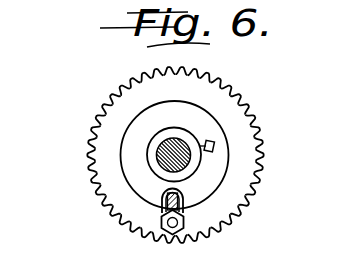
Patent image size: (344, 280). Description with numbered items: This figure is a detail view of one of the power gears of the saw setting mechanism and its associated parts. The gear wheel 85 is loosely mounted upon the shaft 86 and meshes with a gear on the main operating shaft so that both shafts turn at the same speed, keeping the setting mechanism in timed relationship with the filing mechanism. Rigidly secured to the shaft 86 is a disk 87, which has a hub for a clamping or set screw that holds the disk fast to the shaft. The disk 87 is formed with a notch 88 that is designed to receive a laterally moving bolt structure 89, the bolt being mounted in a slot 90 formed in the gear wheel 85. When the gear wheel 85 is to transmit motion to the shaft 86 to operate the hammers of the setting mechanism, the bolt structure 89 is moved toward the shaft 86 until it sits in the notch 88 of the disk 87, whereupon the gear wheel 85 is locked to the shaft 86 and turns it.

The gear wheel 85 is at (262, 181).
The shaft 86 is at (157, 152).
The disk 87 is at (214, 146).
The notch 88 is at (186, 206).
The bolt structure 89 is at (183, 227).
The slot 90 is at (181, 214).